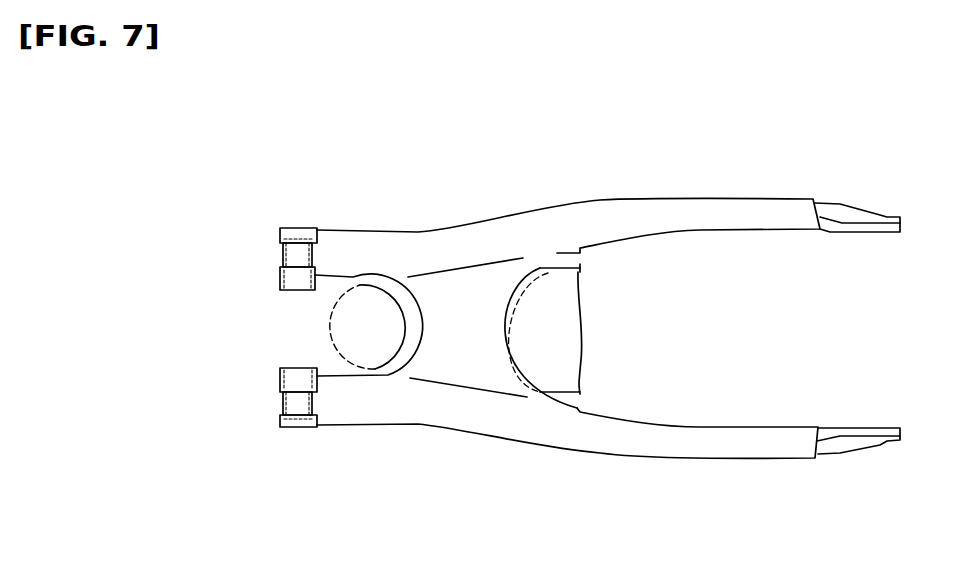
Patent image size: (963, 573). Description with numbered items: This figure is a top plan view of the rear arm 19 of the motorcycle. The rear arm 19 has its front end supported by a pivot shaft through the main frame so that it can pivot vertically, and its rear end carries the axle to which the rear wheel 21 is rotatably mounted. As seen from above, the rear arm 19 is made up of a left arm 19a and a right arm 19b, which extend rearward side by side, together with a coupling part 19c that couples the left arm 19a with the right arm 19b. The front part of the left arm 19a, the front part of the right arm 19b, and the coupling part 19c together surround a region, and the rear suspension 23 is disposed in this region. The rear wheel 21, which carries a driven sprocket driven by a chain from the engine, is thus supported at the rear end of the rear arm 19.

The rear arm 19 is at (549, 331).
The left arm 19a is at (610, 442).
The right arm 19b is at (638, 222).
The coupling part 19c is at (487, 364).
The rear wheel 21 is at (557, 268).
The rear suspension 23 is at (323, 333).